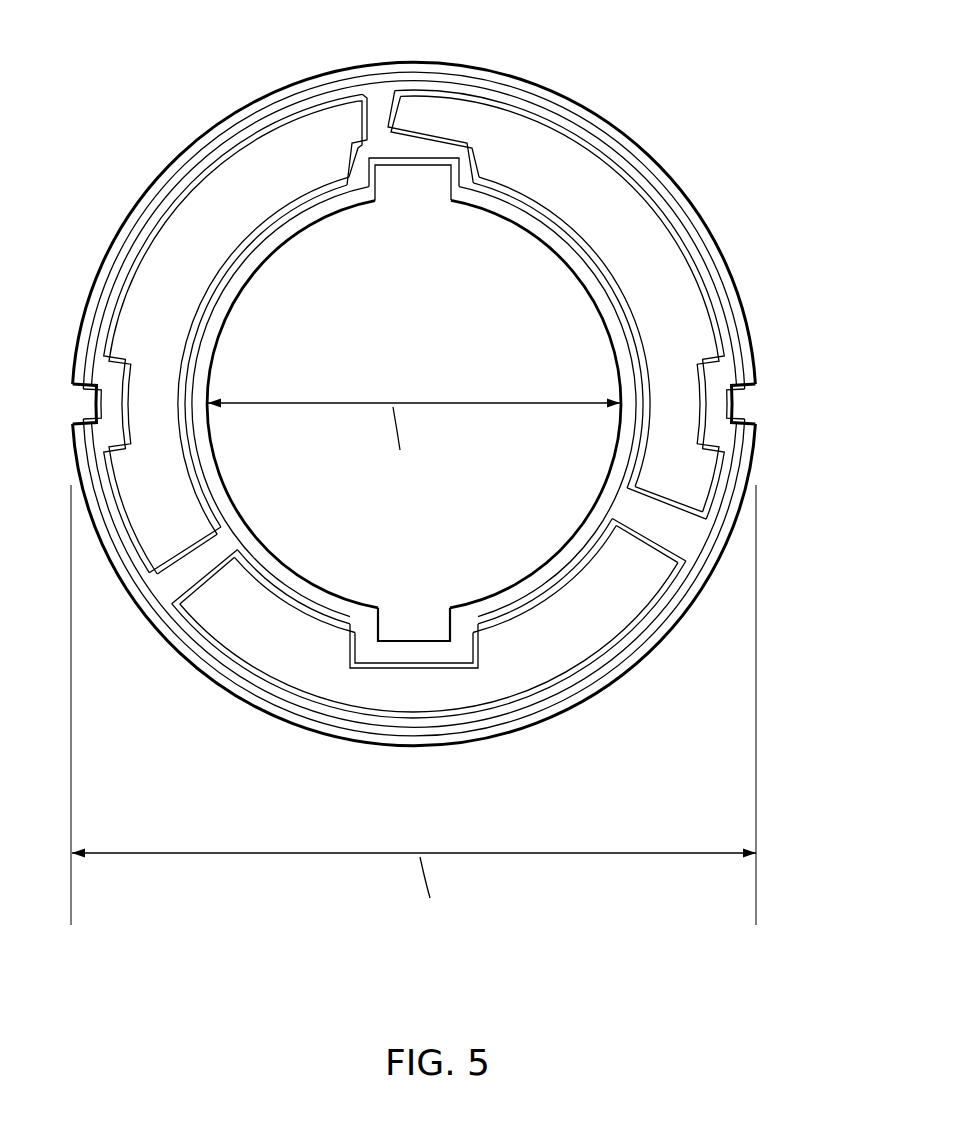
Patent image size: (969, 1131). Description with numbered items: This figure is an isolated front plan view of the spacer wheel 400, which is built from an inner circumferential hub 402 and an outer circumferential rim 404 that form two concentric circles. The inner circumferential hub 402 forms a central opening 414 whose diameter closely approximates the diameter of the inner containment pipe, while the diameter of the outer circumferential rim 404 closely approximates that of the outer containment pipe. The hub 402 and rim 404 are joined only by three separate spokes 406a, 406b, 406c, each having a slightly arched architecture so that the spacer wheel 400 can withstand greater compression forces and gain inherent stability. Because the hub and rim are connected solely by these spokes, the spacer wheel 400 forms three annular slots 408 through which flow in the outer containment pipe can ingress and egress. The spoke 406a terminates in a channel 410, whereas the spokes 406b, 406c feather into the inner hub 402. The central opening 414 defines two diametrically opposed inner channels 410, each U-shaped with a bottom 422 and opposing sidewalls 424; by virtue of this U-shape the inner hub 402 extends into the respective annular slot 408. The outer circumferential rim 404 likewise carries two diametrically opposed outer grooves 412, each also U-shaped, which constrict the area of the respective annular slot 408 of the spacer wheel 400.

The spacer wheel 400 is at (184, 921).
The inner circumferential hub 402 is at (414, 482).
The outer circumferential rim 404 is at (466, 377).
The spoke 406a is at (380, 118).
The spoke 406b is at (660, 510).
The spoke 406c is at (187, 577).
The annular slot 408 is at (598, 178).
The inner channel 410 is at (412, 190).
The outer groove 412 is at (768, 404).
The central opening 414 is at (480, 563).
The bottom 422 is at (382, 641).
The sidewalls 424 is at (430, 650).